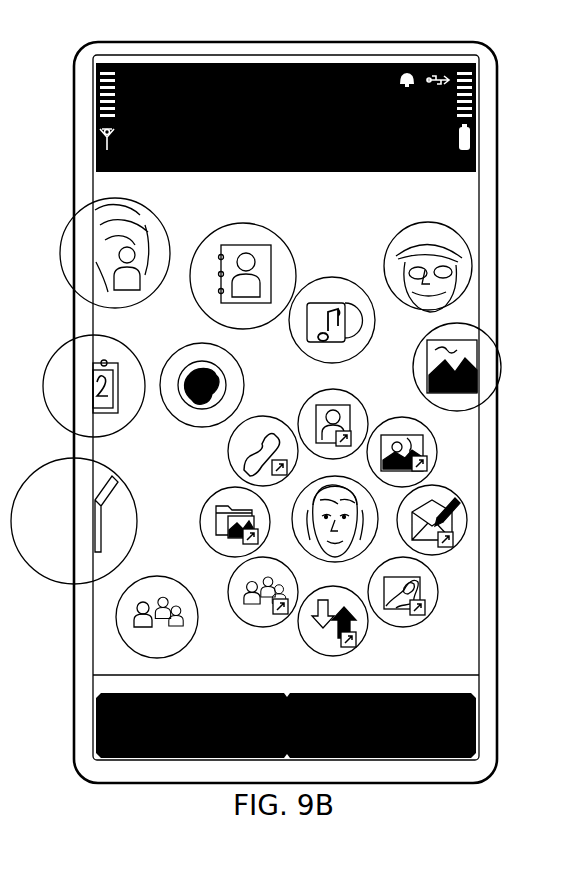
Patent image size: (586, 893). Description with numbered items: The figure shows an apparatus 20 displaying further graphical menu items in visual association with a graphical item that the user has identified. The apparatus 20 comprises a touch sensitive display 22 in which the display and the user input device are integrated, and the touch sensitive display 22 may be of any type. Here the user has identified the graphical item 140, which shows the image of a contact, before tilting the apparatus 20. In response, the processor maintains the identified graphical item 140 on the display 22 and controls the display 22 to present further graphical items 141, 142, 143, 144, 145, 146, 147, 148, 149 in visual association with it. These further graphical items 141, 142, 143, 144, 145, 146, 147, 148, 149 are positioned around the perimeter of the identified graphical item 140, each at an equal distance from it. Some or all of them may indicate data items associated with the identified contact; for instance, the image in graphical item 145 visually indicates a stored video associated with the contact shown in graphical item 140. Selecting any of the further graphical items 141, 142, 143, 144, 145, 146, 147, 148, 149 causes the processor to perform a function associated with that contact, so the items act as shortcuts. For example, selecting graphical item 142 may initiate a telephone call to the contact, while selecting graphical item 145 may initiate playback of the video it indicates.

The apparatus 20 is at (497, 684).
The touch sensitive display 22 is at (100, 657).
The identified graphical item 140 is at (372, 492).
The further graphical item 141 is at (200, 521).
The further graphical item 142 is at (228, 453).
The further graphical item 143 is at (310, 390).
The further graphical item 144 is at (390, 422).
The further graphical item 145 is at (437, 441).
The further graphical item 146 is at (467, 520).
The further graphical item 147 is at (440, 592).
The further graphical item 148 is at (358, 644).
The further graphical item 149 is at (228, 592).